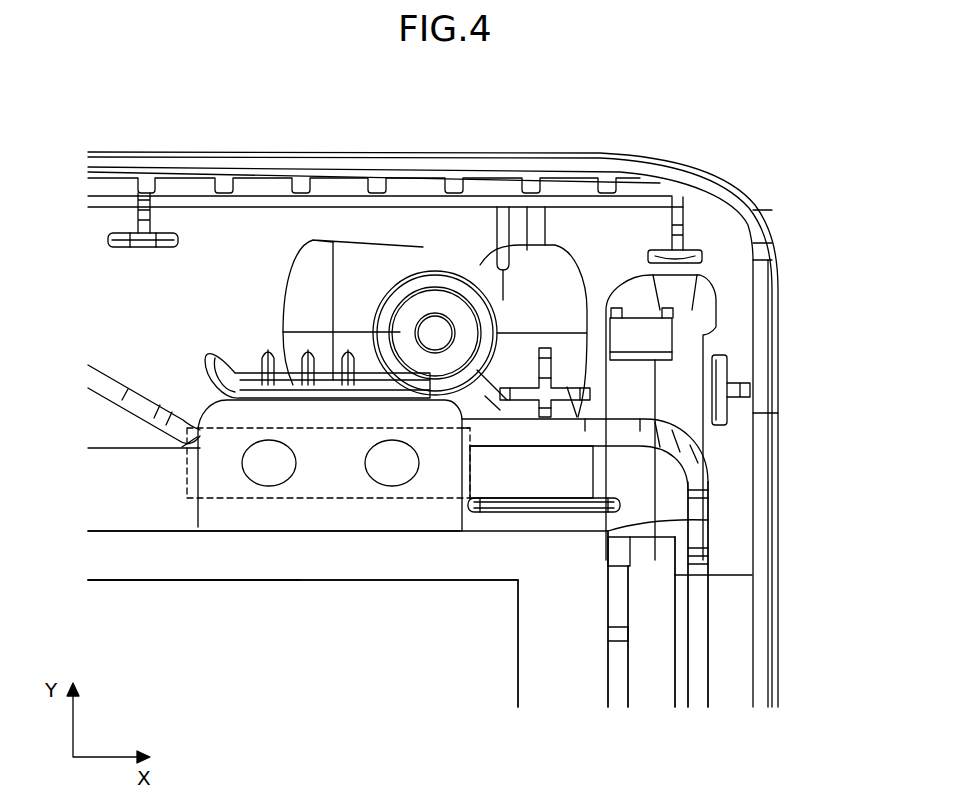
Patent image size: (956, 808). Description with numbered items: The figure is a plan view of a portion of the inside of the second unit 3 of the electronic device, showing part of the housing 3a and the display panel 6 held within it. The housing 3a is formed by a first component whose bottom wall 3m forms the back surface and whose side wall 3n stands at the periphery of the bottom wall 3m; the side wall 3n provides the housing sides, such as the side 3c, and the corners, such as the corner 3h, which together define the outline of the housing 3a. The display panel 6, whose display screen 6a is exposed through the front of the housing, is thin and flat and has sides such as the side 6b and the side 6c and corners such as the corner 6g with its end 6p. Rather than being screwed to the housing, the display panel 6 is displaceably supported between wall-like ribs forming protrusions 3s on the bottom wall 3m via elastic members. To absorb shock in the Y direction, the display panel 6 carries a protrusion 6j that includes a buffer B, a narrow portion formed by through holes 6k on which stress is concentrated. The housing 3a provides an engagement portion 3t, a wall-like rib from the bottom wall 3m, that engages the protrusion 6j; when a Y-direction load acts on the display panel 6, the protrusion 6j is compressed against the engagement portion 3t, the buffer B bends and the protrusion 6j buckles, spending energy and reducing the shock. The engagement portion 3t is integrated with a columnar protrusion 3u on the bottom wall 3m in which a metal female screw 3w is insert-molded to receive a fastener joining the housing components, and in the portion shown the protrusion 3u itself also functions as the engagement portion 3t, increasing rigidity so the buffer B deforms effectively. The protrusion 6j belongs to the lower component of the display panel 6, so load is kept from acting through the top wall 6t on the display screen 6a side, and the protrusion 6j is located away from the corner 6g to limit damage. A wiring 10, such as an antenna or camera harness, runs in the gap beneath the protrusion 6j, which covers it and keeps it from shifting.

The housing 3a is at (628, 157).
The side 3c is at (433, 437).
The side wall 3n is at (130, 150).
The corner 3h is at (748, 183).
The bottom wall 3m is at (243, 220).
The engagement portion 3t is at (330, 358).
The female screw 3w is at (435, 297).
The protrusion 3u is at (479, 290).
The protrusion 3s is at (565, 513).
The second unit 3 is at (678, 417).
The display panel 6 is at (608, 667).
The end 6p is at (690, 527).
The protrusion 6j is at (233, 527).
The through hole 6k is at (277, 483).
The buffer B is at (187, 466).
The side 6b is at (155, 527).
The top wall 6t is at (107, 567).
The display screen 6a is at (503, 688).
The corner 6g is at (590, 551).
The side 6c is at (612, 640).
The wiring 10 is at (107, 390).